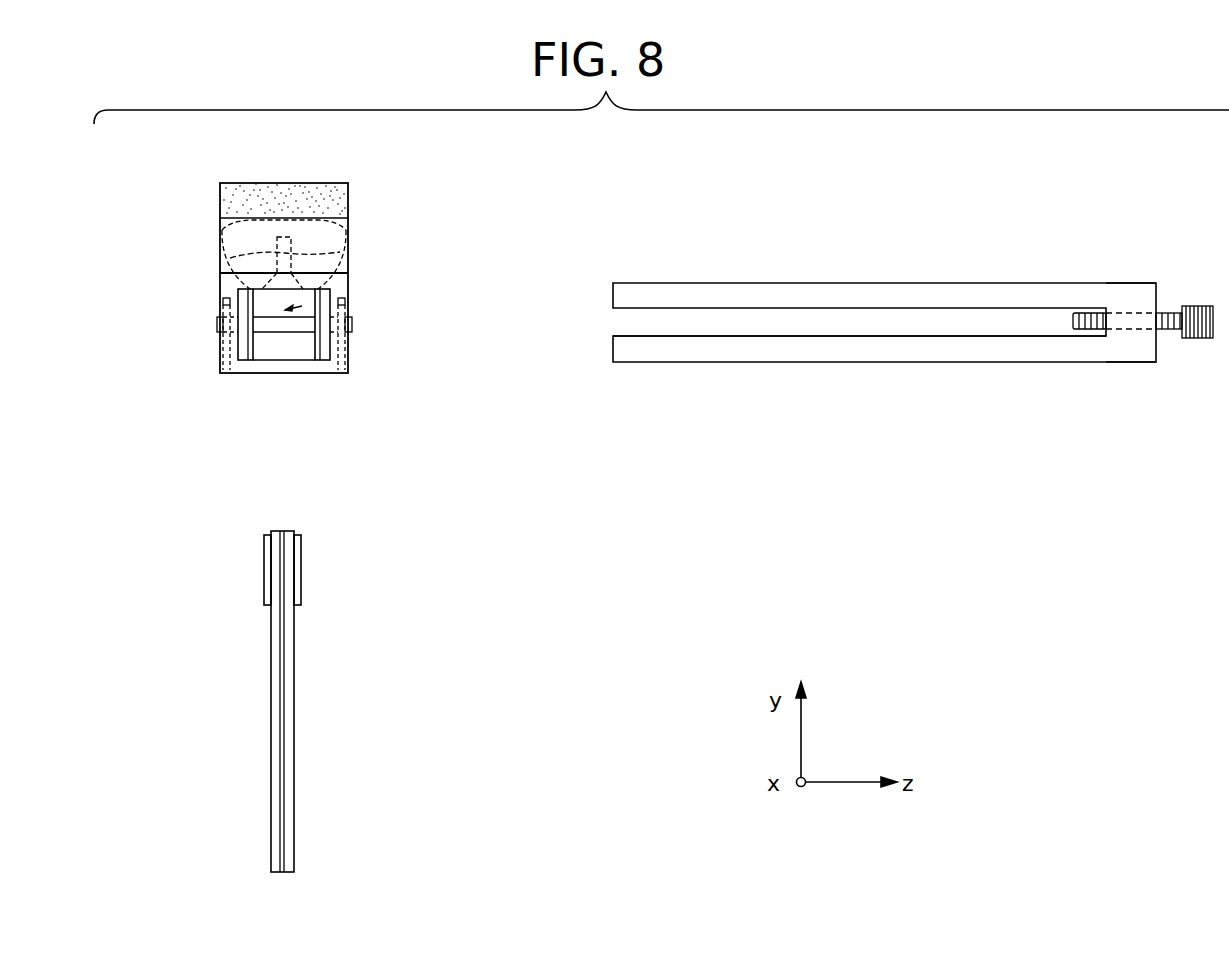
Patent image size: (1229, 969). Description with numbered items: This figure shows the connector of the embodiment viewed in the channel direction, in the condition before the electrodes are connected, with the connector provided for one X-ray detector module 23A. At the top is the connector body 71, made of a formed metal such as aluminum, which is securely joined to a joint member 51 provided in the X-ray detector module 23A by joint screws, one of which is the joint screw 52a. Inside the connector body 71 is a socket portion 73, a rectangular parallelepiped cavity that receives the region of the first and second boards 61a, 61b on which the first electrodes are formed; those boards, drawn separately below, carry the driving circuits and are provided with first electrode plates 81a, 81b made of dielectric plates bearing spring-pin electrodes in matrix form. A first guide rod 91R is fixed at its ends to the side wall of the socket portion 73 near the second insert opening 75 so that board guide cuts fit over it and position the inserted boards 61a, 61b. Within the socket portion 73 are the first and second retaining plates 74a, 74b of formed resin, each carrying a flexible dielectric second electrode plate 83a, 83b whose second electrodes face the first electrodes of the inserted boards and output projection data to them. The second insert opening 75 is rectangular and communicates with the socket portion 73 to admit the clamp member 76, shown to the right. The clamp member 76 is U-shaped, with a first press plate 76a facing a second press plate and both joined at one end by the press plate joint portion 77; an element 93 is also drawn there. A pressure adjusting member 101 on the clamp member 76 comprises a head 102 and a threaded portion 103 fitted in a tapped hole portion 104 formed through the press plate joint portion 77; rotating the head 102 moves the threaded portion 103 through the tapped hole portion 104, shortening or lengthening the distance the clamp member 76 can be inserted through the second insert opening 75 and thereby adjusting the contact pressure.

The X-ray detector module 23A is at (332, 183).
The joint member 51 is at (221, 226).
The connector body 71 is at (226, 285).
The joint screw 52a is at (340, 252).
The socket portion 73 is at (327, 297).
The first guide rod 91R is at (217, 323).
The first retaining plate 74a is at (340, 349).
The second retaining plate 74b is at (226, 347).
The second electrode plate 83a is at (315, 360).
The second electrode plate 83b is at (253, 360).
The second insert opening 75 is at (293, 355).
The clamp member 76 is at (898, 272).
The first press plate 76a is at (733, 347).
The press plate joint portion 77 is at (1135, 300).
The lower arm 93 is at (870, 327).
The threaded portion 103 is at (1092, 315).
The tapped hole portion 104 is at (1129, 329).
The head 102 is at (1195, 314).
The pressure adjusting member 101 is at (1173, 346).
The first electrode plate 81a is at (298, 572).
The first electrode plate 81b is at (266, 577).
The first board 61a is at (290, 845).
The second board 61b is at (275, 843).